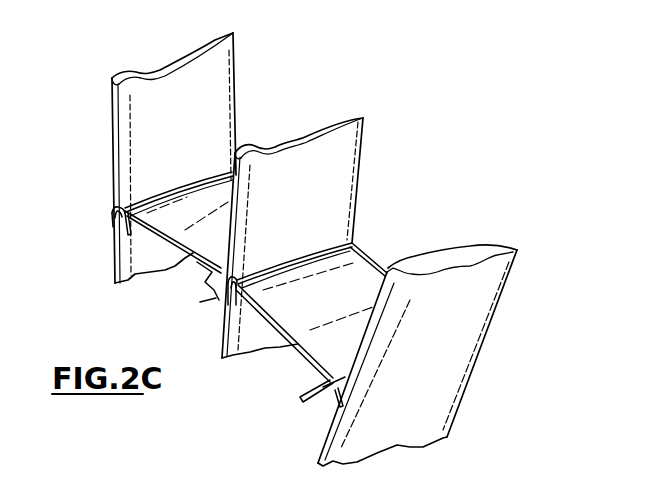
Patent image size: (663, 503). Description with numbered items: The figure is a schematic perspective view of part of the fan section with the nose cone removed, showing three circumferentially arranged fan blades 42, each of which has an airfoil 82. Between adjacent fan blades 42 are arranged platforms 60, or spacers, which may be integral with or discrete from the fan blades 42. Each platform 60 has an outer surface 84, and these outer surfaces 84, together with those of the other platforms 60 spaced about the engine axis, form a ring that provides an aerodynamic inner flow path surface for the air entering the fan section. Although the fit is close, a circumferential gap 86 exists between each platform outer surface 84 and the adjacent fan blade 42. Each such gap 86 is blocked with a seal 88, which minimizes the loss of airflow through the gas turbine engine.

The fan blade 42 is at (243, 52).
The airfoil 82 is at (123, 108).
The outer surface 84 is at (197, 237).
The circumferential gap 86 is at (295, 250).
The seal 88 is at (113, 213).
The platform 60 is at (386, 272).